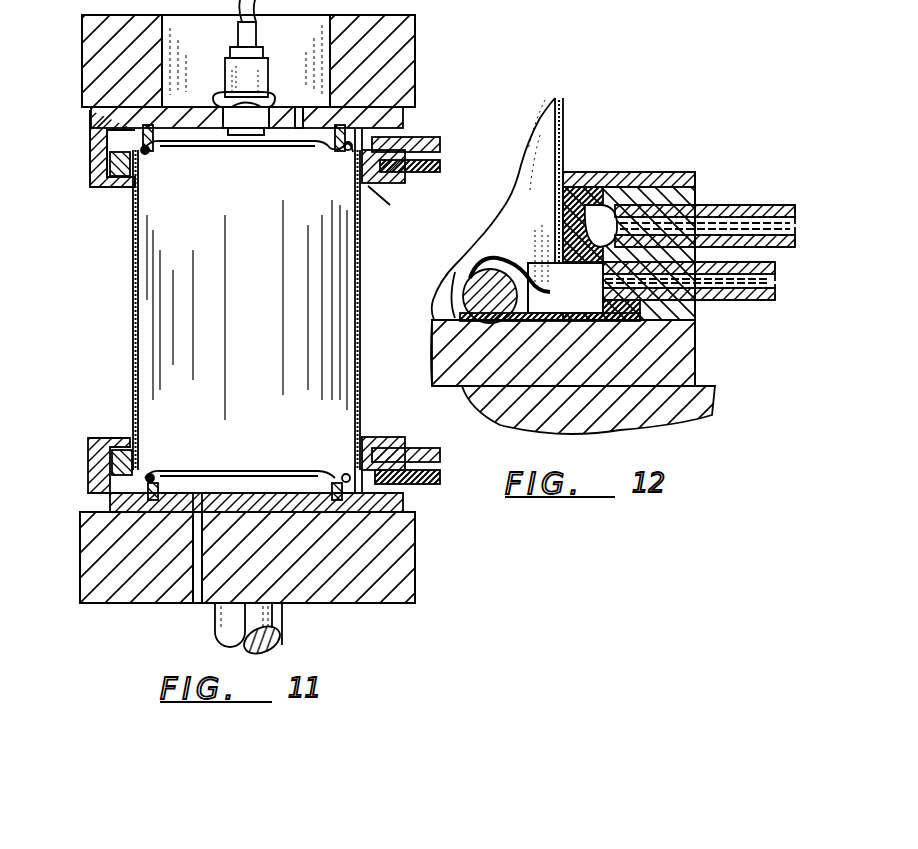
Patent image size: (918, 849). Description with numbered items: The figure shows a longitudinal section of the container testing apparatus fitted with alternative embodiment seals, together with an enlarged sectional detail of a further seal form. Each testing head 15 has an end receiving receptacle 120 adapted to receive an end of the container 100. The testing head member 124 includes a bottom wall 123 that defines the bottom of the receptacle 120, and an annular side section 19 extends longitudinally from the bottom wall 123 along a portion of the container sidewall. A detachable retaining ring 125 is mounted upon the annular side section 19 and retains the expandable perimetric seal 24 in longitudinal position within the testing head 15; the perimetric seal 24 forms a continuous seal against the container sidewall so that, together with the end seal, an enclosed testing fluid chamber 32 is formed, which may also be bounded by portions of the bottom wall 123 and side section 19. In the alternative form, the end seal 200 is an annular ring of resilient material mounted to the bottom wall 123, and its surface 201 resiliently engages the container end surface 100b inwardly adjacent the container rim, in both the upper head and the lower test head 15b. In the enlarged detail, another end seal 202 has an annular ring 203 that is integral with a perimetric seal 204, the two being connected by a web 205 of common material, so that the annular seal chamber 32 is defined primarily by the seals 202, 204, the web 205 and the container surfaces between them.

In FIG. 11, the testing head member 124 is at (88, 86).
In FIG. 11, the bottom wall 123 is at (270, 496).
In FIG. 11, the end receiving receptacle 120 is at (100, 140).
In FIG. 11, the retaining ring 125 is at (392, 183).
In FIG. 11, the annular side section 19 is at (373, 142).
In FIG. 11, the perimetric seal 24 is at (376, 190).
In FIG. 11, the testing fluid chamber 32 is at (402, 128).
In FIG. 12, the testing fluid chamber 32 is at (588, 303).
In FIG. 11, the container 100 is at (360, 274).
In FIG. 12, the container 100 is at (566, 140).
In FIG. 11, the container end surface 100b is at (213, 150).
In FIG. 11, the end seal 200 is at (150, 152).
In FIG. 11, the seal surface 201 is at (150, 152).
In FIG. 12, the testing head 15 is at (719, 189).
In FIG. 12, the lower test head 15b is at (697, 337).
In FIG. 12, the end seal 202 is at (462, 320).
In FIG. 12, the annular ring 203 is at (528, 278).
In FIG. 12, the perimetric seal 204 is at (556, 224).
In FIG. 12, the web 205 is at (556, 322).